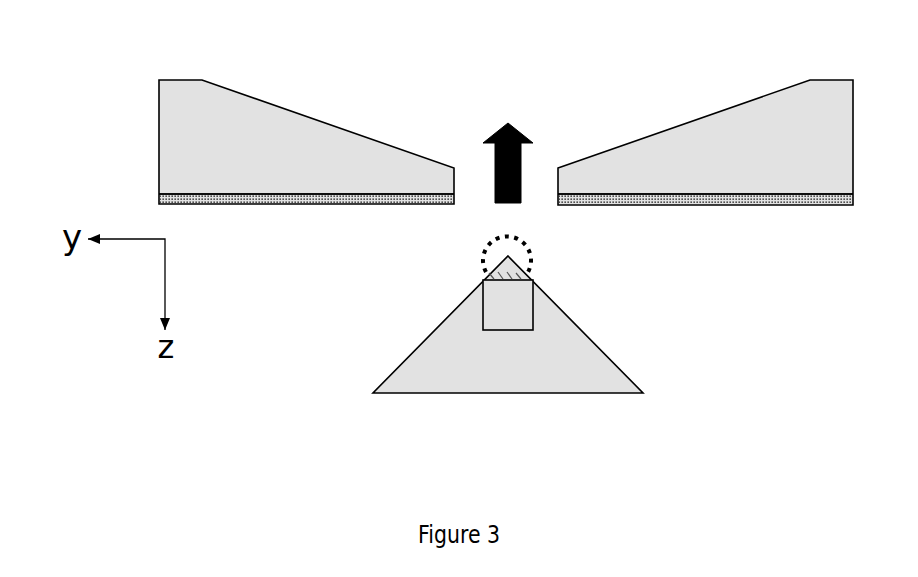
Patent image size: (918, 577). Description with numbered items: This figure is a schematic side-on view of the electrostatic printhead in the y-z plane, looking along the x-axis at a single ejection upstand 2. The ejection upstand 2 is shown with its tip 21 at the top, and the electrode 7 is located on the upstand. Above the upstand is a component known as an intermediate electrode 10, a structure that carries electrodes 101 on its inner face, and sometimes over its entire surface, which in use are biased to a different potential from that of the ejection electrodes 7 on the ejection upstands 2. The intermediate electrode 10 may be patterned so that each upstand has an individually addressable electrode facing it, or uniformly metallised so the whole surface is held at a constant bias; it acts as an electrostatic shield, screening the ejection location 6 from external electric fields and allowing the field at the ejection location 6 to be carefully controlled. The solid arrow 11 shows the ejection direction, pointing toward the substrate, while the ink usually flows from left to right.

The intermediate electrode 10 is at (222, 130).
The electrodes 101 is at (407, 204).
The solid arrow 11 is at (509, 123).
The ejection upstand 2 is at (528, 352).
The electrode 7 is at (493, 306).
The tip 21 is at (510, 270).
The ejection location 6 is at (533, 256).